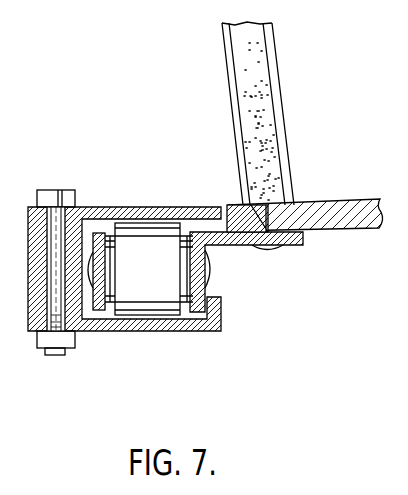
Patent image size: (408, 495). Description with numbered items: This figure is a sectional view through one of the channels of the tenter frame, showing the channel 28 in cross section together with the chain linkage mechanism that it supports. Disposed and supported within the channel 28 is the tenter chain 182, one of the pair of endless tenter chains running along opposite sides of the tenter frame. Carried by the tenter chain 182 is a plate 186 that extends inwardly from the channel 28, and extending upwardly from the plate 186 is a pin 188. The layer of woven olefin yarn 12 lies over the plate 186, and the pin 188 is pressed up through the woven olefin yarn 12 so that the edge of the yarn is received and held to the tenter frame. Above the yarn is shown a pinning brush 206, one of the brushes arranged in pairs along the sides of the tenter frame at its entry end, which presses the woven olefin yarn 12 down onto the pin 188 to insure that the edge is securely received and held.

The woven olefin yarn 12 is at (351, 202).
The channel 28 is at (103, 207).
The tenter chain 182 is at (110, 330).
The plate 186 is at (304, 242).
The pin 188 is at (238, 206).
The pinning brush 206 is at (260, 67).